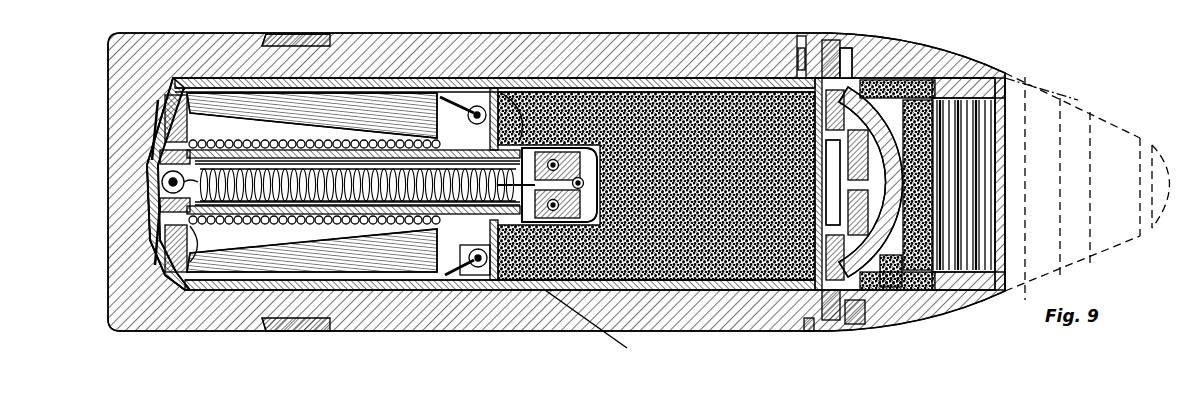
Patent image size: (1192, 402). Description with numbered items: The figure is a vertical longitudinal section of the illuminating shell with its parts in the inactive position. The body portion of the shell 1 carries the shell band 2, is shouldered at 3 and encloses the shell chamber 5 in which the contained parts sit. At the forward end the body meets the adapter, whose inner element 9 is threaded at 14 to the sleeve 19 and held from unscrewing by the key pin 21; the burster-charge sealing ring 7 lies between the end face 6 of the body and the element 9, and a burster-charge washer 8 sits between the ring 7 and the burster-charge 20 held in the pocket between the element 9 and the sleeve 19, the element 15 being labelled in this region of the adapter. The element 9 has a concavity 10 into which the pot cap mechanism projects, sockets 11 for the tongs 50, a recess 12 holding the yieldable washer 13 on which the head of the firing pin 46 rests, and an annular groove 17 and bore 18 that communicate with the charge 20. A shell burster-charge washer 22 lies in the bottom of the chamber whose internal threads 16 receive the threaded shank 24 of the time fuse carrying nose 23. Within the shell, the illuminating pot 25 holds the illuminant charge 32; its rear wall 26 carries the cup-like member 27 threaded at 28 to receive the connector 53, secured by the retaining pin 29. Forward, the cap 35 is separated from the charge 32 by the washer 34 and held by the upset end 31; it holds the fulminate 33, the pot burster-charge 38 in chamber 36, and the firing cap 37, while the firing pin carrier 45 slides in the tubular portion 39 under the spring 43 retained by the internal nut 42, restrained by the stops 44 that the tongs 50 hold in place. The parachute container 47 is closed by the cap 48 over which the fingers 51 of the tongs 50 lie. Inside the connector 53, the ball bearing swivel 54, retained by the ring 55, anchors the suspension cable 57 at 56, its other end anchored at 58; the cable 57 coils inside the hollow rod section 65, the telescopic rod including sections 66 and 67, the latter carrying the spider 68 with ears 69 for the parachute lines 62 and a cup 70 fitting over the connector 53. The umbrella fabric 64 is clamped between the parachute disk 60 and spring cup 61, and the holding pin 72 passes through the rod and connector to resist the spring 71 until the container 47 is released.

The body portion of the shell 1 is at (122, 315).
The shell band 2 is at (300, 36).
The shoulder 3 is at (797, 48).
The shell chamber 5 is at (588, 80).
The end face of the body portion 6 is at (802, 47).
The burster-charge sealing ring 7 is at (830, 48).
The burster-charge washer 8 is at (847, 52).
The inner element of the adapter 9 is at (935, 316).
The concavity in the adapter 10 is at (855, 328).
The sockets 11 is at (845, 345).
The recess 12 is at (945, 140).
The yieldable washer 13 is at (918, 165).
The threads 14 is at (993, 76).
The filling 15 is at (918, 100).
The internal threads 16 is at (970, 316).
The annular groove 17 is at (900, 258).
The bore 18 is at (958, 72).
The outer sleeve of the adapter 19 is at (925, 320).
The burster-charge 20 is at (925, 85).
The key pin 21 is at (985, 302).
The shell burster-charge washer 22 is at (925, 190).
The time fuse carrying nose 23 is at (1041, 79).
The threaded shank 24 is at (1068, 100).
The illuminating pot 25 is at (751, 102).
The wall 26 is at (594, 329).
The cup-like member 27 is at (576, 185).
The internal threads of the cup-like member 28 is at (549, 130).
The retaining pin 29 is at (519, 128).
The upset end of the pot 31 is at (601, 128).
The illuminant charge 32 is at (656, 186).
The fulminate 33 is at (763, 154).
The washer 34 is at (785, 350).
The cap 35 is at (793, 140).
The chamber 36 is at (783, 235).
The firing cap 37 is at (756, 206).
The pot burster-charge 38 is at (781, 217).
The tubular projecting portion 39 is at (783, 255).
The internal nut 42 is at (925, 238).
The spring 43 is at (925, 120).
The firing pin carrier stops 44 is at (870, 100).
The firing pin carrier 45 is at (935, 222).
The firing pin 46 is at (930, 205).
The parachute container 47 is at (238, 92).
The cap 48 is at (165, 120).
The tongs 50 is at (203, 82).
The fingers 51 is at (162, 95).
The connector 53 is at (532, 215).
The ball bearing swivel element 54 is at (398, 161).
The ring 55 is at (560, 165).
The cable anchorage 56 is at (585, 183).
The suspension cable 57 is at (165, 160).
The cable anchorage in locking cap 58 is at (162, 181).
The parachute disk 60 is at (168, 135).
The spring cup 61 is at (152, 142).
The parachute lines 62 is at (466, 117).
The umbrella fabric 64 is at (180, 270).
The inner section of the telescopic rod 65 is at (162, 203).
The telescopic rod section 66 is at (160, 215).
The outermost telescopic rod section 67 is at (158, 232).
The parachute lines-spider and spring cup member 68 is at (524, 95).
The ears 69 is at (480, 282).
The cup of the spider 70 is at (486, 266).
The spring 71 is at (168, 252).
The holding pin 72 is at (521, 240).